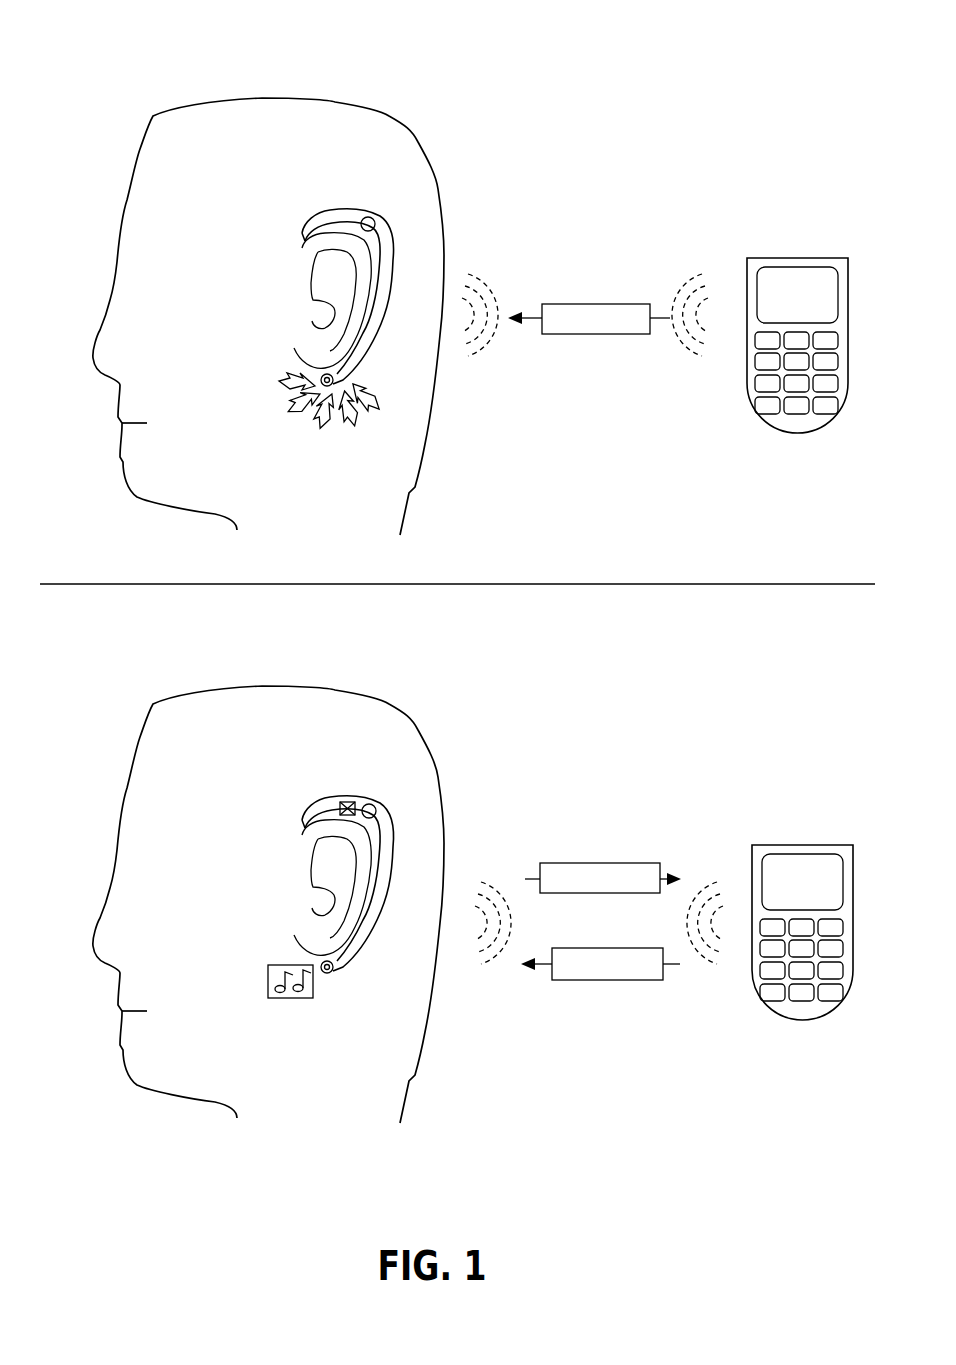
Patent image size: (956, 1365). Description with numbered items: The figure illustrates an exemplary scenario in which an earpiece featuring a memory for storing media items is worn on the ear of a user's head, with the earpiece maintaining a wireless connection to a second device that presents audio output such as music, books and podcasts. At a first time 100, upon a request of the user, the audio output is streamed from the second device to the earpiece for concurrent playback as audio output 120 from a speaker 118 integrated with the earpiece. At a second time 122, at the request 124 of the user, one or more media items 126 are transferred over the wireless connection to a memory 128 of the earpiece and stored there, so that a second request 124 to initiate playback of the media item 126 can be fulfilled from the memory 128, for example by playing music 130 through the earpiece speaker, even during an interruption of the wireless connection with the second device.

The first time 100 is at (146, 58).
The speaker 118 is at (334, 381).
The audio output 120 is at (288, 376).
The second time 122 is at (148, 645).
The request 124 is at (582, 863).
The media item 126 is at (623, 948).
The memory 128 is at (352, 801).
The music 130 is at (291, 965).